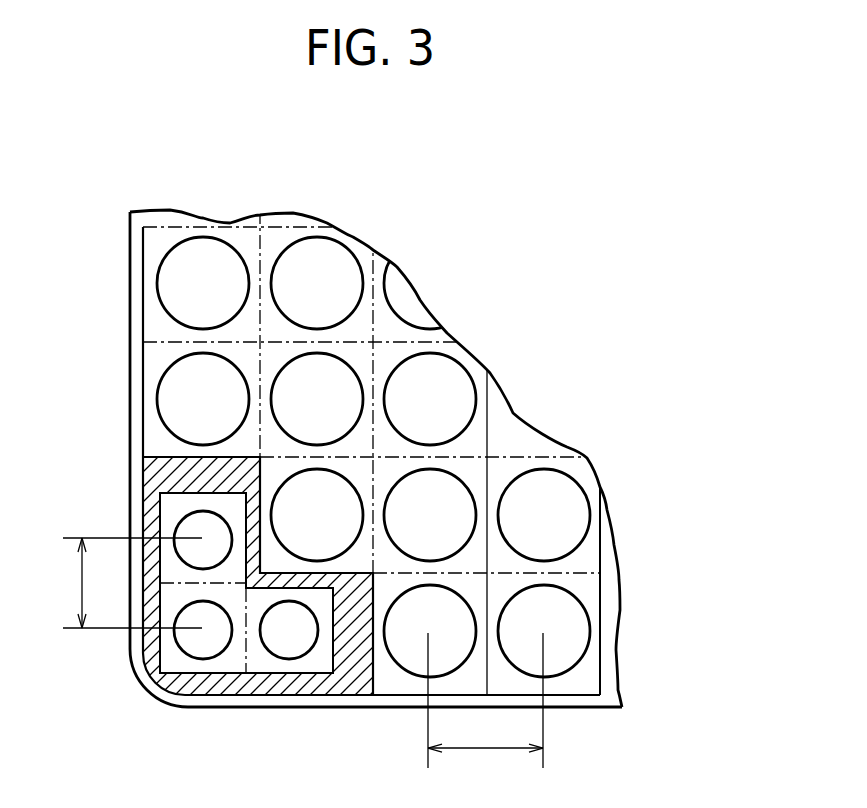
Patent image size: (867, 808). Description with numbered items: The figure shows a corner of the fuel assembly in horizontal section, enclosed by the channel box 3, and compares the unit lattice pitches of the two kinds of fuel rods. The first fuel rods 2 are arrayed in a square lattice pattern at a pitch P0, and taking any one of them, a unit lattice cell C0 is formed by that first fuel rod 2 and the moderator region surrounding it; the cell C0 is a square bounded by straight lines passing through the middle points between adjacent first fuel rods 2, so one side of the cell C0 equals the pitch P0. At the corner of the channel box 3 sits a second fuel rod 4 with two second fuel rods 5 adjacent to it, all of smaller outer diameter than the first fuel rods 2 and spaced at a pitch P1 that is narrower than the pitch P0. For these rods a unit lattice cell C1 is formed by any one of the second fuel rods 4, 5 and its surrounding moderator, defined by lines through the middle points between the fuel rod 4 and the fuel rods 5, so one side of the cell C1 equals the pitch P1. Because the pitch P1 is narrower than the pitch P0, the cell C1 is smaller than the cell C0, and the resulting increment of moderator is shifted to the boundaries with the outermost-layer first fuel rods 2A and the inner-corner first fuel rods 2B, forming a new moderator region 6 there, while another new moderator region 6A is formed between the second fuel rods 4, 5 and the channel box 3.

The first fuel rod 2 is at (340, 272).
The first fuel rod in outermost layer 2A is at (180, 395).
The first fuel rod at corner of inner layer 2B is at (323, 505).
The channel box 3 is at (590, 703).
The second fuel rod 4 is at (192, 645).
The second fuel rod 5 is at (187, 525).
The new moderator region 6 is at (350, 627).
The new moderator region 6A is at (270, 667).
The unit lattice cell C0 is at (475, 556).
The unit lattice cell C1 is at (252, 672).
The pitch of first fuel rods P0 is at (485, 709).
The pitch of second fuel rods P1 is at (125, 583).